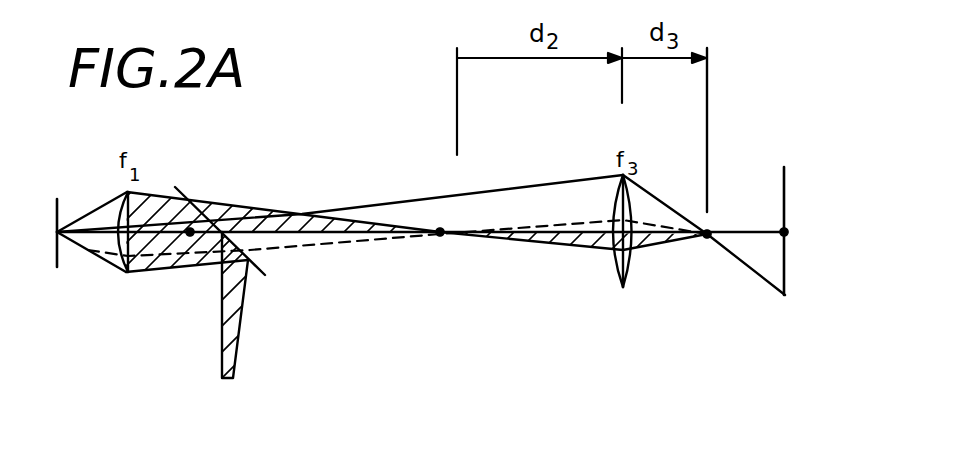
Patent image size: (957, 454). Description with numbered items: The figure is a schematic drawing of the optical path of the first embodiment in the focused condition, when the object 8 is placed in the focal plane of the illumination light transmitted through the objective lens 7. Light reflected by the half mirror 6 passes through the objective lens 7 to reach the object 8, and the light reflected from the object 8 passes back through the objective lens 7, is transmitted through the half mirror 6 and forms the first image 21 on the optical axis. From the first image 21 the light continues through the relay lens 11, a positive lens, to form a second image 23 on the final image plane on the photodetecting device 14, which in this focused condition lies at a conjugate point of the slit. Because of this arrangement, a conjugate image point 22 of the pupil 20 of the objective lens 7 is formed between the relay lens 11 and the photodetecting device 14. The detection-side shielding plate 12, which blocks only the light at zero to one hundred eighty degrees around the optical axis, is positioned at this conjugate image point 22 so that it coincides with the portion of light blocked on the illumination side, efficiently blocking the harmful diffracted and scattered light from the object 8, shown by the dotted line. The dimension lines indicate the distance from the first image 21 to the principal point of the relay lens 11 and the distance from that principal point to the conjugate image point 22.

The object 8 is at (58, 262).
The objective lens 7 is at (105, 259).
The pupil of the objective lens 20 is at (194, 235).
The half mirror 6 is at (266, 273).
The first image 21 is at (440, 237).
The relay lens 11 is at (627, 258).
The detection-side shielding plate 12 is at (709, 198).
The conjugate image point of the pupil 22 is at (711, 243).
The second image 23 is at (787, 229).
The photodetecting device 14 is at (786, 273).